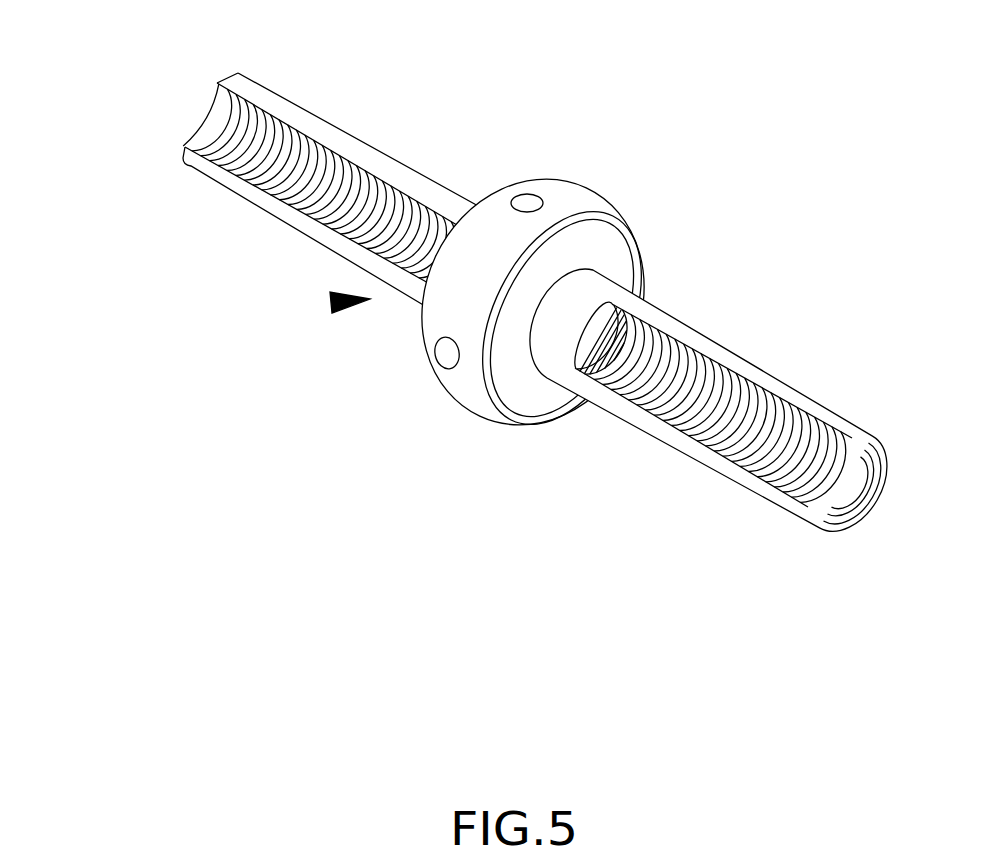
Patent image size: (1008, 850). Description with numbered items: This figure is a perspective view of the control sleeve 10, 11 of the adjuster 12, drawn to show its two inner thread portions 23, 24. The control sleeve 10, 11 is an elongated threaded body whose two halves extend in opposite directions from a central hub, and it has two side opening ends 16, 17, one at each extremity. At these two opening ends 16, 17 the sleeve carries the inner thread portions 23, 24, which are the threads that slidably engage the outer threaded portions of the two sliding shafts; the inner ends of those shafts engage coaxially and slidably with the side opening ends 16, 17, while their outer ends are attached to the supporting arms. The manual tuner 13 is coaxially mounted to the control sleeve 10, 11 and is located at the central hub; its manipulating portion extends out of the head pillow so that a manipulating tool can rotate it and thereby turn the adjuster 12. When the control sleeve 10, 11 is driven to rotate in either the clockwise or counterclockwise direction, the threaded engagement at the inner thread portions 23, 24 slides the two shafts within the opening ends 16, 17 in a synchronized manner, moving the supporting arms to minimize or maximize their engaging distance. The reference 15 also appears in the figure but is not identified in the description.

The control sleeve 10 is at (245, 158).
The control sleeve 11 is at (720, 456).
The adjuster 12 is at (518, 306).
The manual tuner 13 is at (530, 203).
The rotation direction arrow 15 is at (332, 305).
The side opening end 16 is at (856, 532).
The side opening end 17 is at (187, 160).
The inner thread portion 23 is at (303, 177).
The inner thread portion 24 is at (698, 437).